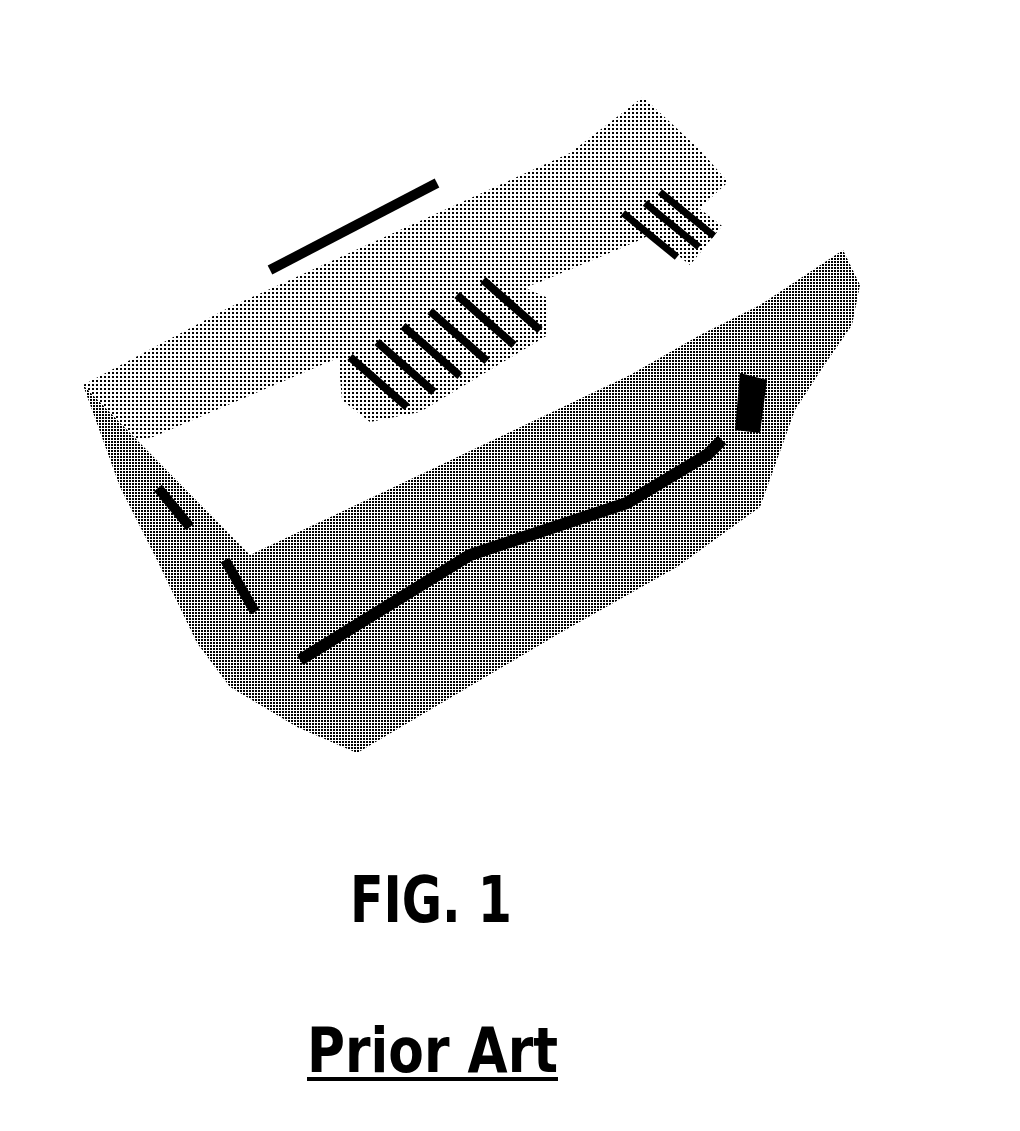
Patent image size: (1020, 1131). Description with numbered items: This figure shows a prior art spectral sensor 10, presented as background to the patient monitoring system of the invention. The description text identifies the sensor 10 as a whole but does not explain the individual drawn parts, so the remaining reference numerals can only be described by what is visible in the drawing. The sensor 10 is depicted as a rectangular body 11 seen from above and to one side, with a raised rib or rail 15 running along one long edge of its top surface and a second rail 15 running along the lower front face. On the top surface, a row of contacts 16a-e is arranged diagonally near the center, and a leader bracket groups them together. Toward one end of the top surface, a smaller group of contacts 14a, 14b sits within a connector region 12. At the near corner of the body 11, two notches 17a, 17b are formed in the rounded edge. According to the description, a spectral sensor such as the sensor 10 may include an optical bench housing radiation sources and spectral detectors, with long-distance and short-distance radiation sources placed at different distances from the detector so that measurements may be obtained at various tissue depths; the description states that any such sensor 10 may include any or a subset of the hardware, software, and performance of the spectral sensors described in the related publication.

The spectral sensor 10 is at (484, 379).
The housing 11 is at (165, 387).
The connector block 12 is at (690, 232).
The contact 14a is at (673, 203).
The contact 14b is at (623, 217).
The rail / edge rib 15 is at (353, 212).
The contact pins 16a-e is at (380, 443).
The latch notch 17a is at (167, 527).
The latch notch 17b is at (240, 573).